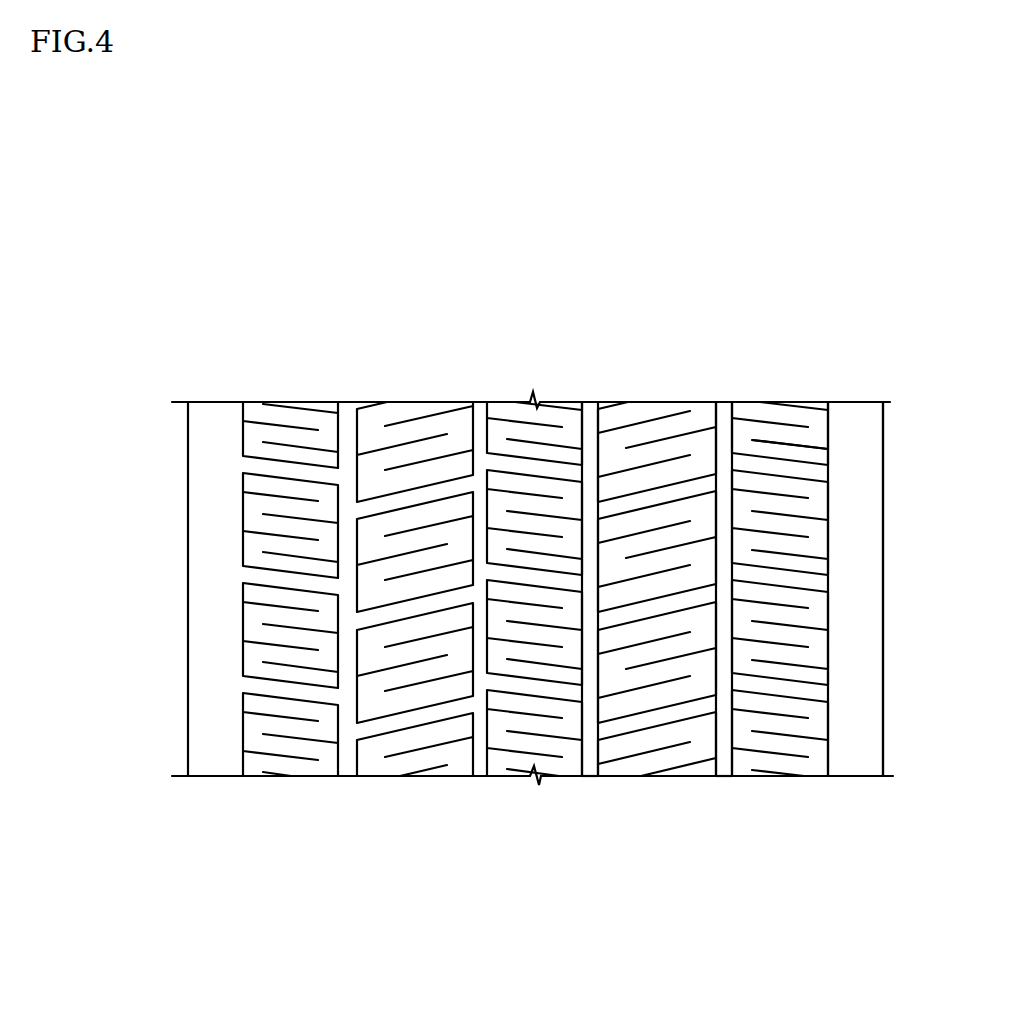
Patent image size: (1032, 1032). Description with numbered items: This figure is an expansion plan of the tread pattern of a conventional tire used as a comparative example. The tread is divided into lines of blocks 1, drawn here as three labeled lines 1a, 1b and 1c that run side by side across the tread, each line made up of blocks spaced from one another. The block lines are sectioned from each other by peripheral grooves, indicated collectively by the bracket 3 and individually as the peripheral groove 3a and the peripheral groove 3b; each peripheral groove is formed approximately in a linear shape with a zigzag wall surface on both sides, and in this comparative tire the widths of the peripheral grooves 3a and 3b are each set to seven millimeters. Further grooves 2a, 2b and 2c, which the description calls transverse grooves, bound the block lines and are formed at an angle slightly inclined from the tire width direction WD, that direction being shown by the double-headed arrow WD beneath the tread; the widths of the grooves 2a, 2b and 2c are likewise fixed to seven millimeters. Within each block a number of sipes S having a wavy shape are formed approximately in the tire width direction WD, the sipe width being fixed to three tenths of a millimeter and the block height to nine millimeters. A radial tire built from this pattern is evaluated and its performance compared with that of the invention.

The block 1 is at (703, 333).
The first land portion 1a is at (573, 406).
The block 1b is at (656, 401).
The block 1c is at (743, 403).
The sipe S is at (787, 440).
The transverse groove 2a is at (597, 698).
The transverse groove 2b is at (722, 703).
The transverse groove 2c is at (832, 697).
The groove widths 3 is at (598, 850).
The peripheral groove 3a is at (596, 786).
The peripheral groove 3b is at (725, 786).
The tire width direction WD is at (454, 806).